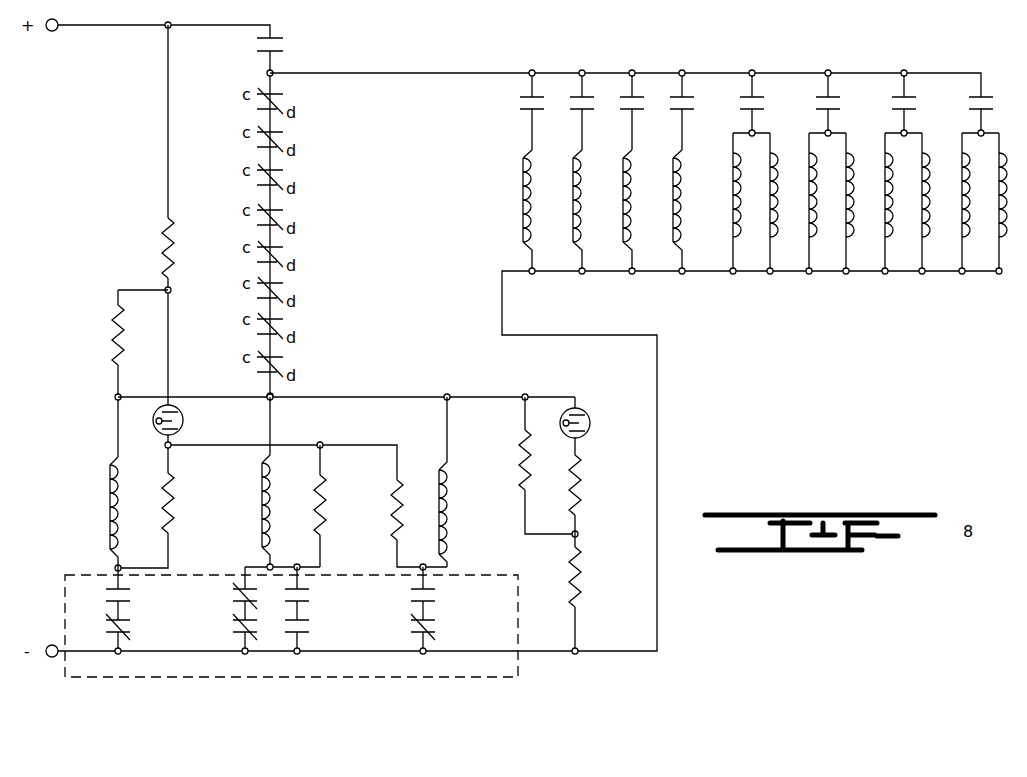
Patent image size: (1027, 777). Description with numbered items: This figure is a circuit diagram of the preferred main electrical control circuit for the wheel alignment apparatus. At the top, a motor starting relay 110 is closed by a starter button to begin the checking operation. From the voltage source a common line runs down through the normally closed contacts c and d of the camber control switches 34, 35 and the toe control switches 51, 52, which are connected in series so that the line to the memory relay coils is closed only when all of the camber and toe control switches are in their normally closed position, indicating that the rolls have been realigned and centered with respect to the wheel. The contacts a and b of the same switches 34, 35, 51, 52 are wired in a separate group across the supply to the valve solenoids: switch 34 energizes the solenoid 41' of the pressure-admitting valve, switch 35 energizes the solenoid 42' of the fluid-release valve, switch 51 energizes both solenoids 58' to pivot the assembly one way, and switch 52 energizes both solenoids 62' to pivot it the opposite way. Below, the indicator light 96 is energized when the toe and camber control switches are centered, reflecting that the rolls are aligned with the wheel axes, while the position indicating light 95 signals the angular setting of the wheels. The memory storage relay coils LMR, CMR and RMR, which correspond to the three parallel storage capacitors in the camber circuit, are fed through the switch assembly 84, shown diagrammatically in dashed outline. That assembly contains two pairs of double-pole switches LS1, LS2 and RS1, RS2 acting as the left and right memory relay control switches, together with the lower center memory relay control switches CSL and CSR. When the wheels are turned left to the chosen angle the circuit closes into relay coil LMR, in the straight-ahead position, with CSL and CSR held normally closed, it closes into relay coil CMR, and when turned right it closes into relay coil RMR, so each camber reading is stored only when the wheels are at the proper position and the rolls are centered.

The motor starting relay 110 is at (285, 44).
The camber control switch 34 is at (283, 99).
The camber control switch 35 is at (283, 137).
The inner toe control switch 51 is at (283, 252).
The toe control switch 52 is at (283, 288).
The solenoid of valve 41 41' is at (557, 223).
The solenoid of valve 42 42' is at (618, 225).
The solenoids of valves 58 58' is at (831, 215).
The solenoids of valves 62 62' is at (907, 215).
The position indicating light 95 is at (184, 421).
The indicator light 96 is at (591, 422).
The switch assembly 84 is at (405, 678).
The left memory storage relay coil LMR is at (108, 499).
The center memory storage relay coil CMR is at (260, 499).
The right memory storage relay coil RMR is at (452, 496).
The left memory relay control switch LS1 is at (104, 595).
The left memory relay control switch LS2 is at (104, 626).
The center memory relay control switch CSL is at (240, 596).
The center memory relay control switch CSR is at (240, 627).
The right memory relay control switch RS1 is at (437, 596).
The right memory relay control switch RS2 is at (437, 627).